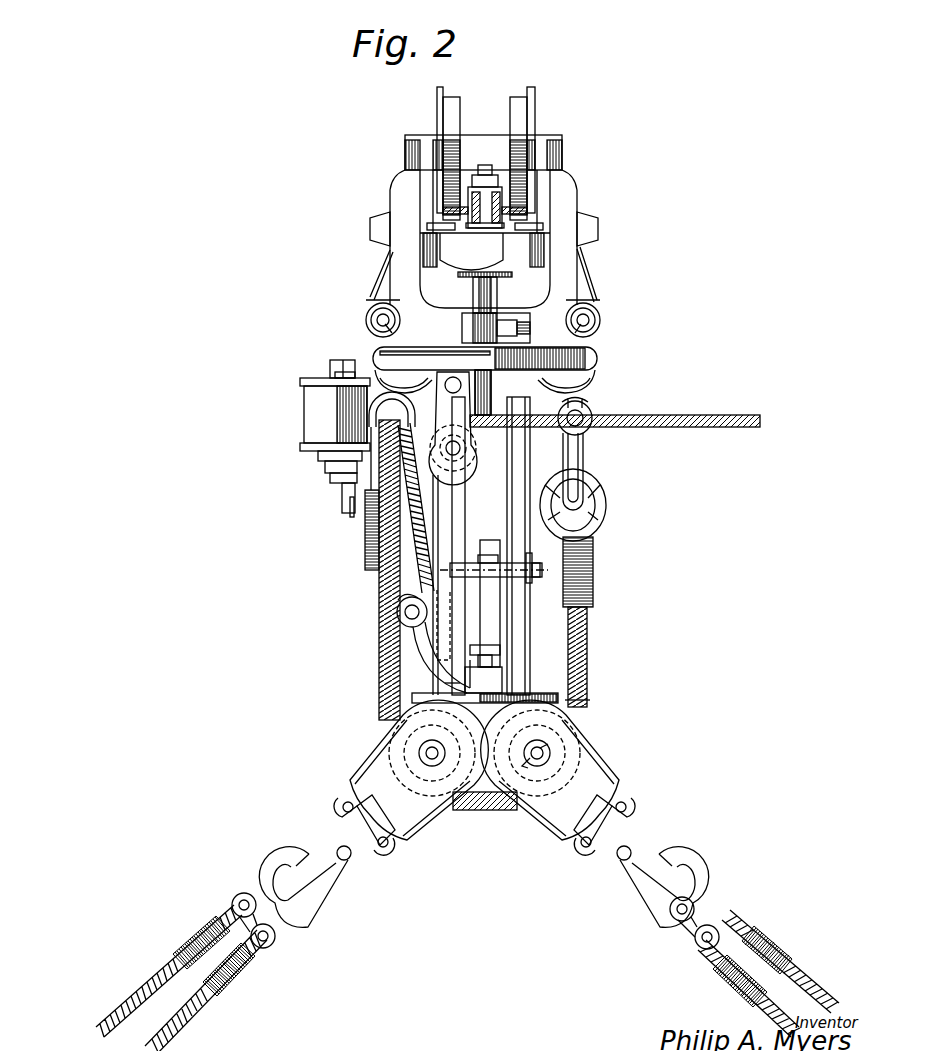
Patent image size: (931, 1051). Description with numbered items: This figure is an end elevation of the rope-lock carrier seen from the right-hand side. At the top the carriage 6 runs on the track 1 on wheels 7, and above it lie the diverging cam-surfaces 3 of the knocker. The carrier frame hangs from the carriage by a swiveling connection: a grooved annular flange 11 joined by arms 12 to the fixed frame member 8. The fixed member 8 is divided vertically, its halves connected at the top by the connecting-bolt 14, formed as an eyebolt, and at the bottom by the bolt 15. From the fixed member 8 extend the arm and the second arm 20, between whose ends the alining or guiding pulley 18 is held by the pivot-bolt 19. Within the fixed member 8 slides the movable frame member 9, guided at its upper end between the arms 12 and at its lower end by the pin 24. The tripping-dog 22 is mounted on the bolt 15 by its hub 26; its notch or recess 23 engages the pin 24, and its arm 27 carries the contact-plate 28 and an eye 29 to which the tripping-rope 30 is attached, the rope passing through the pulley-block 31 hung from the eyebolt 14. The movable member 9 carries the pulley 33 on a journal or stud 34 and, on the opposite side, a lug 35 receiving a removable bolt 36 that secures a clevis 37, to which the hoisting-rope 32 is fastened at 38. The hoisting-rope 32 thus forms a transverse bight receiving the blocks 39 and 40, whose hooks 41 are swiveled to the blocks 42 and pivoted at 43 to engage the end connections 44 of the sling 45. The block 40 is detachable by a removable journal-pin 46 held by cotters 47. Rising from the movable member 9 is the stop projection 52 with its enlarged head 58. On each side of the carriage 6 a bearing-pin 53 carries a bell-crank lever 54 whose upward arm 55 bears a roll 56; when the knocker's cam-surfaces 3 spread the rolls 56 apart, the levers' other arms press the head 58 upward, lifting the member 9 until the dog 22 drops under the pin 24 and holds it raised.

The track 1 is at (443, 210).
The cam-surfaces 3 is at (420, 268).
The carriage 6 is at (392, 184).
The wheels 7 is at (518, 106).
The fixed frame member 8 is at (430, 640).
The movable frame member 9 is at (530, 470).
The grooved annular flange 11 is at (597, 358).
The arms 12 is at (588, 382).
The connecting-bolt 14 is at (462, 345).
The bolt 15 is at (420, 665).
The alining or guiding pulley 18 is at (300, 410).
The pivot-bolt 19 is at (343, 360).
The second arm 20 is at (330, 372).
The tripping-dog 22 is at (490, 703).
The notch or recess 23 is at (526, 560).
The pin 24 is at (485, 560).
The hub 26 is at (505, 640).
The arm 27 is at (445, 688).
The contact-plate 28 is at (592, 698).
The eye 29 is at (397, 613).
The tripping-rope 30 is at (372, 540).
The pulley-block 31 is at (470, 478).
The hoisting-rope 32 is at (382, 642).
The pulley 33 is at (365, 530).
The journal or stud 34 is at (342, 493).
The lug 35 is at (584, 402).
The removable bolt 36 is at (592, 426).
The clevis 37 is at (585, 464).
The rope fastening 38 is at (606, 500).
The block 39 is at (425, 828).
The block 40 is at (552, 828).
The hooks 41 is at (280, 852).
The blocks 42 is at (338, 805).
The joint or pivot 43 is at (348, 860).
The end connections 44 is at (243, 893).
The sling 45 is at (232, 992).
The removable journal-pin 46 is at (425, 750).
The cotters 47 is at (550, 756).
The stop projection 52 is at (500, 292).
The bearing-pin 53 is at (370, 308).
The bell-crank lever 54 is at (368, 322).
The arm 55 is at (383, 268).
The roll 56 is at (373, 222).
The enlarged head 58 is at (458, 266).